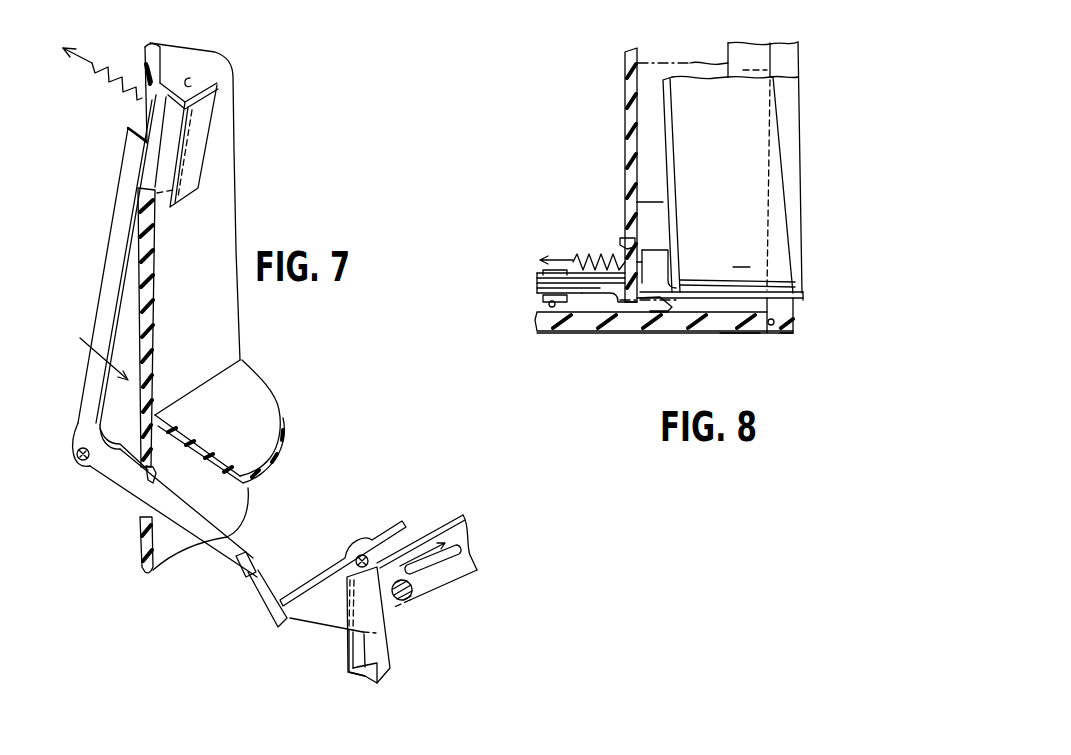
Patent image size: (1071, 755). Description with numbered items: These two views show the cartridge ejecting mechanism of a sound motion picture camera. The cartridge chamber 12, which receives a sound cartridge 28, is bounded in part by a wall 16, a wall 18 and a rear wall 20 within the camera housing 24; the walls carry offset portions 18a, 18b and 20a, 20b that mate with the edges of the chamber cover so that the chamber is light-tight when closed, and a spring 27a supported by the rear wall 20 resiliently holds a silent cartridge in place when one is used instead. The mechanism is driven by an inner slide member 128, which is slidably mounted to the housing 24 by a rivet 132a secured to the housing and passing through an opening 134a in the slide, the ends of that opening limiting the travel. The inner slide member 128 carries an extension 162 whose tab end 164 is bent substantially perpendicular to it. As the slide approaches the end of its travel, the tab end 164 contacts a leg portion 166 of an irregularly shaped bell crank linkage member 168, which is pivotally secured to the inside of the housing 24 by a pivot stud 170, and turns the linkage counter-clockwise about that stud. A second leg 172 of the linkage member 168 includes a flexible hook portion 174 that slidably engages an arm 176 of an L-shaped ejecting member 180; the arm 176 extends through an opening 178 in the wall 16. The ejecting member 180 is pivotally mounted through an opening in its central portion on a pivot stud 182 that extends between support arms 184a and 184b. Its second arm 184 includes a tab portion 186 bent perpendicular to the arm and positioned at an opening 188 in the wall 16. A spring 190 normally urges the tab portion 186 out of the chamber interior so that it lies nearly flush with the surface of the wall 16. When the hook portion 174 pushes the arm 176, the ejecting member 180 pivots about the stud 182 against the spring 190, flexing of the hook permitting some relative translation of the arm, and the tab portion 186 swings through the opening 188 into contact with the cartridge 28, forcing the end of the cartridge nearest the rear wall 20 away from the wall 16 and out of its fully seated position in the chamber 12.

In FIG. 8, the cartridge chamber 12 is at (653, 82).
In FIG. 7, the wall 16 is at (225, 202).
In FIG. 8, the wall 16 is at (630, 98).
In FIG. 7, the wall 18 is at (246, 388).
In FIG. 8, the wall 18 is at (643, 155).
In FIG. 8, the offset portion 18a is at (770, 303).
In FIG. 8, the offset portion 18b is at (787, 310).
In FIG. 8, the rear wall 20 is at (730, 312).
In FIG. 8, the offset portion 20a is at (772, 326).
In FIG. 8, the offset portion 20b is at (790, 326).
In FIG. 8, the housing 24 is at (737, 328).
In FIG. 8, the spring 27a is at (660, 314).
In FIG. 8, the sound cartridge 28 is at (783, 163).
In FIG. 7, the inner slide member 128 is at (468, 571).
In FIG. 7, the rivet 132a is at (417, 593).
In FIG. 7, the opening 134a is at (462, 530).
In FIG. 7, the extension 162 is at (348, 656).
In FIG. 7, the tab end 164 is at (365, 675).
In FIG. 7, the leg portion 166 is at (386, 658).
In FIG. 7, the bell crank linkage member 168 is at (325, 623).
In FIG. 7, the pivot stud 170 is at (365, 555).
In FIG. 7, the second leg 172 is at (314, 616).
In FIG. 7, the hook portion 174 is at (250, 593).
In FIG. 7, the arm 176 is at (212, 552).
In FIG. 7, the opening 178 is at (158, 482).
In FIG. 7, the ejecting member 180 is at (97, 307).
In FIG. 8, the ejecting member 180 is at (535, 287).
In FIG. 7, the pivot stud 182 is at (83, 463).
In FIG. 8, the pivot stud 182 is at (553, 307).
In FIG. 7, the second arm 184 is at (112, 268).
In FIG. 8, the second arm 184 is at (580, 287).
In FIG. 8, the support arm 184a is at (600, 297).
In FIG. 7, the support arm 184b is at (98, 428).
In FIG. 8, the support arm 184b is at (537, 272).
In FIG. 7, the tab portion 186 is at (207, 138).
In FIG. 8, the tab portion 186 is at (657, 266).
In FIG. 7, the opening 188 is at (170, 83).
In FIG. 8, the opening 188 is at (633, 245).
In FIG. 7, the spring 190 is at (112, 68).
In FIG. 8, the spring 190 is at (580, 256).